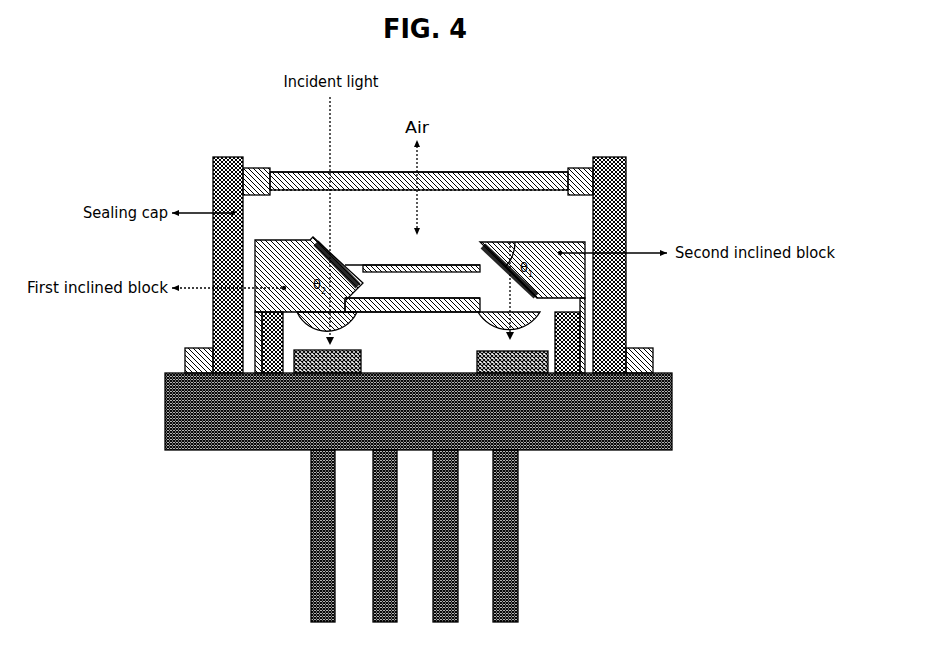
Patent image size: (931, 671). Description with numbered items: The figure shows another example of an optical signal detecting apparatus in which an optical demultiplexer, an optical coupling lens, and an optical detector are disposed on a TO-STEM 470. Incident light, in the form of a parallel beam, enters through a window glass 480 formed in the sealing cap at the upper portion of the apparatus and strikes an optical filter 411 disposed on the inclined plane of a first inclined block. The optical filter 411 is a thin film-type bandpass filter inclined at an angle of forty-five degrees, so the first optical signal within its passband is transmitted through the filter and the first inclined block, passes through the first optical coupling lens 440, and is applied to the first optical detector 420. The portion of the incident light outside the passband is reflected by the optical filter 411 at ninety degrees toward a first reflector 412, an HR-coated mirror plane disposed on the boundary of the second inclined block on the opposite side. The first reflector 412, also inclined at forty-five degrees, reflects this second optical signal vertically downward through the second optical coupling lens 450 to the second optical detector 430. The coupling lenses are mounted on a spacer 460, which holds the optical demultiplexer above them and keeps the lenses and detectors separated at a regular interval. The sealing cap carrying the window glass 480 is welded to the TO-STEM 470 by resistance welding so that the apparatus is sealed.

The optical filter 411 is at (320, 251).
The first reflector 412 is at (525, 292).
The first optical detector 420 is at (322, 362).
The second optical detector 430 is at (515, 362).
The first optical coupling lens 440 is at (321, 323).
The second optical coupling lens 450 is at (518, 322).
The spacer 460 is at (572, 335).
The TO-STEM 470 is at (210, 412).
The window glass 480 is at (513, 185).